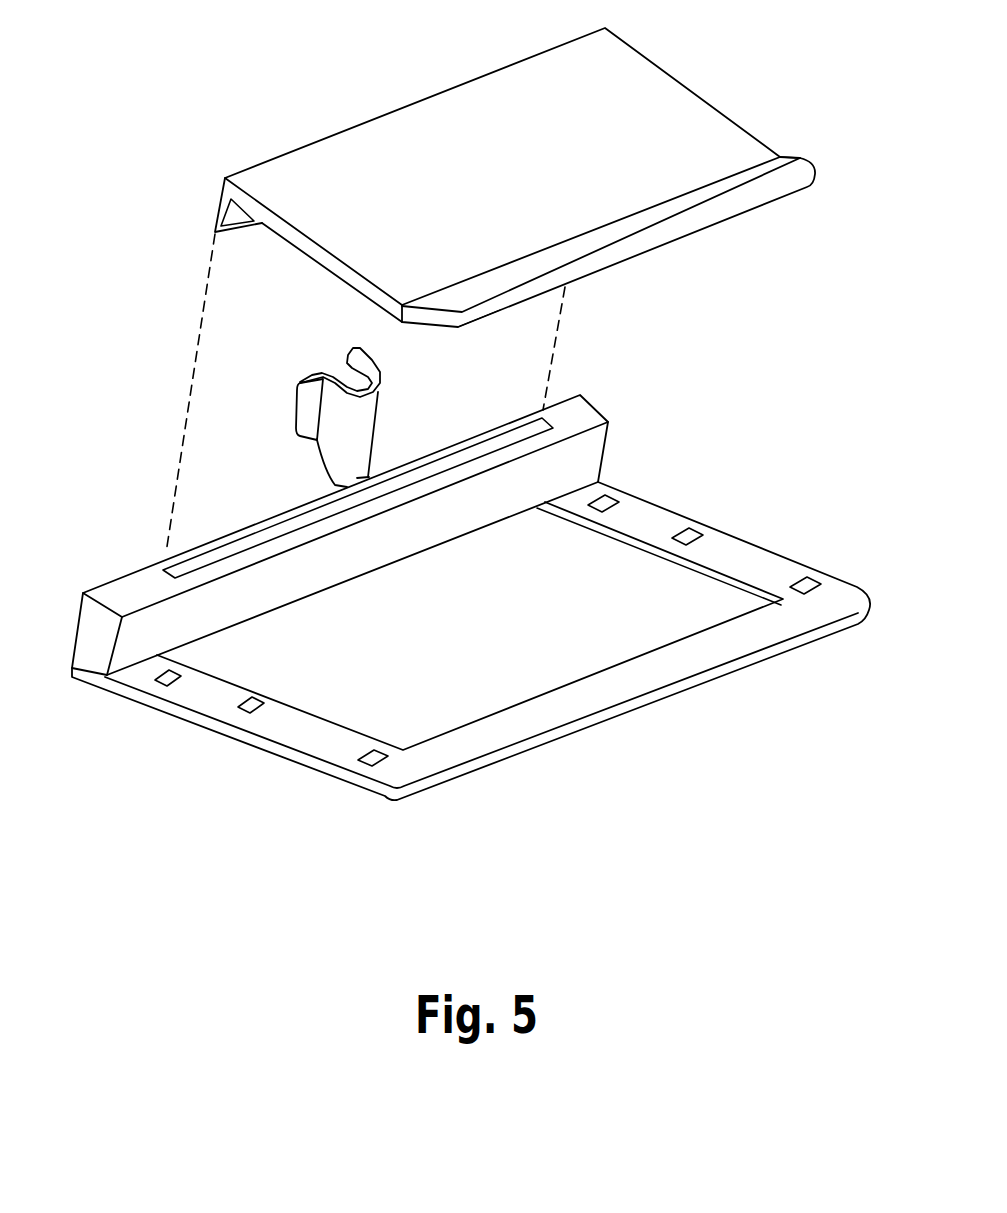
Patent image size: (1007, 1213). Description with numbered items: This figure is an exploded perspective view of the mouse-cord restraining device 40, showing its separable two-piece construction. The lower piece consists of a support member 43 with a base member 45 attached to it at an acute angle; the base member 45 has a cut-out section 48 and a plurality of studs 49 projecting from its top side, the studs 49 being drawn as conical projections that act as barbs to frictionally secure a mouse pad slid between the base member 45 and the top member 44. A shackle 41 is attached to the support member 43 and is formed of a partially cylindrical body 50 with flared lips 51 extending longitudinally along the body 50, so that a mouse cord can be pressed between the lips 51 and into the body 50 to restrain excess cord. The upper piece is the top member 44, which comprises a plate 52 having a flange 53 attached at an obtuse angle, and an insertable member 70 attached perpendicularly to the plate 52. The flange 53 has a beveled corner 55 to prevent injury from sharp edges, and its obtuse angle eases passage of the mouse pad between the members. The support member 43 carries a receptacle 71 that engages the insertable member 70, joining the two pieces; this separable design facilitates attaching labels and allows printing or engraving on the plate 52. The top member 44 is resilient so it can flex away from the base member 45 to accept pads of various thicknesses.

The device 40 is at (708, 438).
The shackle 41 is at (382, 380).
The support member 43 is at (120, 598).
The top member 44 is at (511, 167).
The base member 45 is at (653, 704).
The cut-out section 48 is at (512, 631).
The studs 49 is at (366, 763).
The partially cylindrical body 50 is at (360, 443).
The flared lips 51 is at (355, 350).
The plate 52 is at (642, 97).
The flange 53 is at (657, 217).
The beveled corner 55 is at (807, 189).
The insertable member 70 is at (217, 210).
The receptacle 71 is at (290, 523).